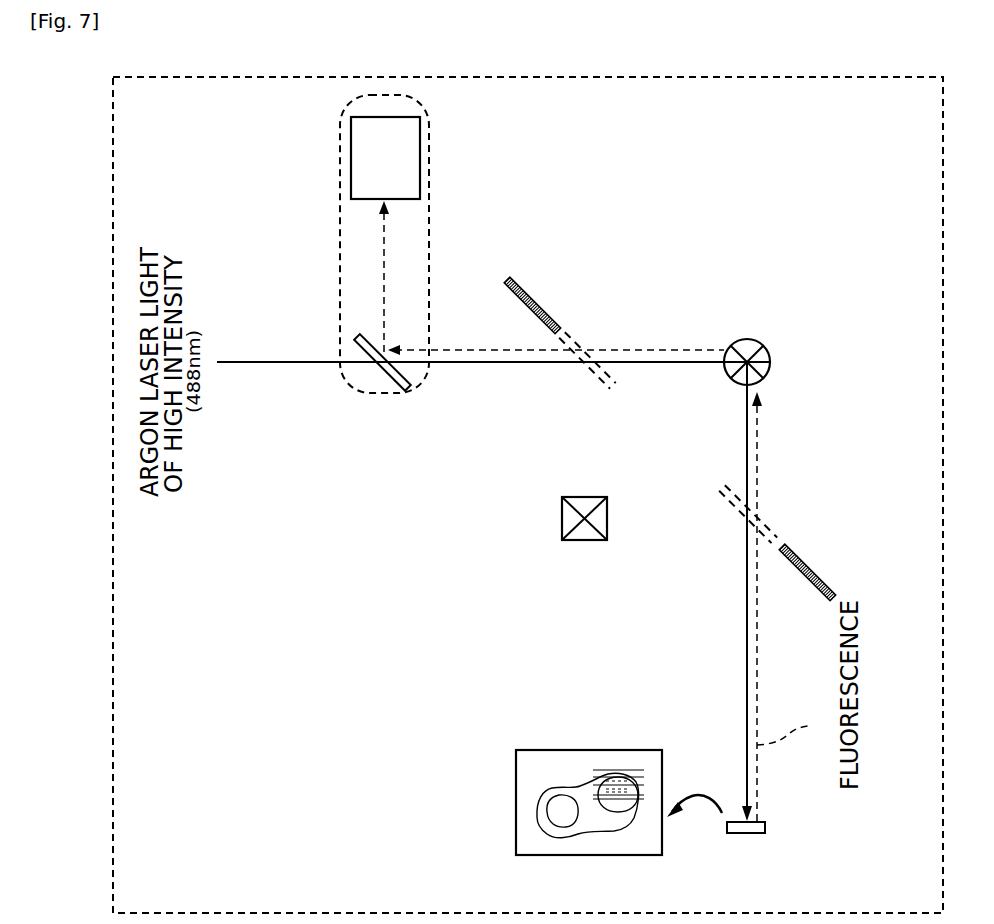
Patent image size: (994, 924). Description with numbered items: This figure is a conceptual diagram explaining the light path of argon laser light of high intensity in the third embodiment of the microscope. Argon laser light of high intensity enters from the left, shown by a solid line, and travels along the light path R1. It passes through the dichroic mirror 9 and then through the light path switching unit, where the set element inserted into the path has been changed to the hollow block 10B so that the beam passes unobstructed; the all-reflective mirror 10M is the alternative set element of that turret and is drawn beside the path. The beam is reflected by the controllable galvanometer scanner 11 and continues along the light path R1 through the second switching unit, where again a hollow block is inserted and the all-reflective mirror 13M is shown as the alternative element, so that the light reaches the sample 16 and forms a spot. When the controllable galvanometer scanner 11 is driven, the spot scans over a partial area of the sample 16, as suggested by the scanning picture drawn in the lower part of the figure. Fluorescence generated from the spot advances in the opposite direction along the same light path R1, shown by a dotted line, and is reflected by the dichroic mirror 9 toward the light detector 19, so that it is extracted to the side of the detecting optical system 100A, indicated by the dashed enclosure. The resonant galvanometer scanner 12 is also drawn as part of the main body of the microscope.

The detecting optical system 100A is at (345, 111).
The light detector 19 is at (351, 165).
The dichroic mirror 9 is at (386, 368).
The all-reflective mirror 10M is at (531, 285).
The hollow block 10B is at (580, 341).
The controllable galvanometer scanner 11 is at (738, 339).
The resonant galvanometer scanner 12 is at (583, 540).
The all-reflective mirror 13M is at (818, 578).
The sample 16 is at (766, 822).
The light path R1 is at (673, 441).